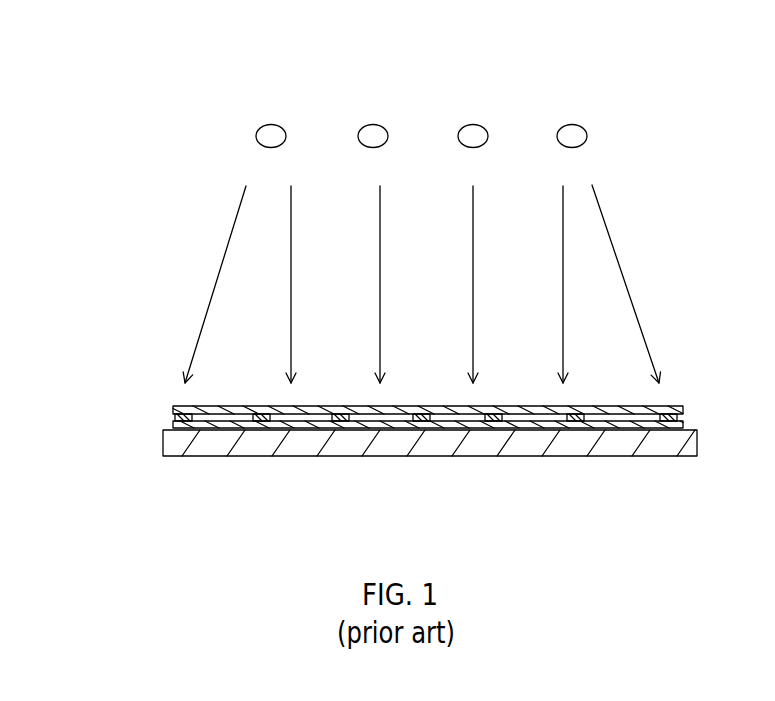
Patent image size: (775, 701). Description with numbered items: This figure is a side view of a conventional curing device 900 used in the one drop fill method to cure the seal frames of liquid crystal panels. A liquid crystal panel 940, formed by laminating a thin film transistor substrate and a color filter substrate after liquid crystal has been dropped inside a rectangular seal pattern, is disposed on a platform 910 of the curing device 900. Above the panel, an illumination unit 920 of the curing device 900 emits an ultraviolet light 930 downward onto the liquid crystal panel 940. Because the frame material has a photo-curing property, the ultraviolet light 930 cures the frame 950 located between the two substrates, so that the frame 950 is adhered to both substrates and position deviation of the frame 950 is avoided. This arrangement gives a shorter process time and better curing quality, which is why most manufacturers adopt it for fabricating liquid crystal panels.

The curing device 900 is at (120, 95).
The platform 910 is at (163, 447).
The illumination unit 920 is at (266, 112).
The ultraviolet light 930 is at (210, 274).
The liquid crystal panel 940 is at (178, 410).
The frame 950 is at (683, 417).